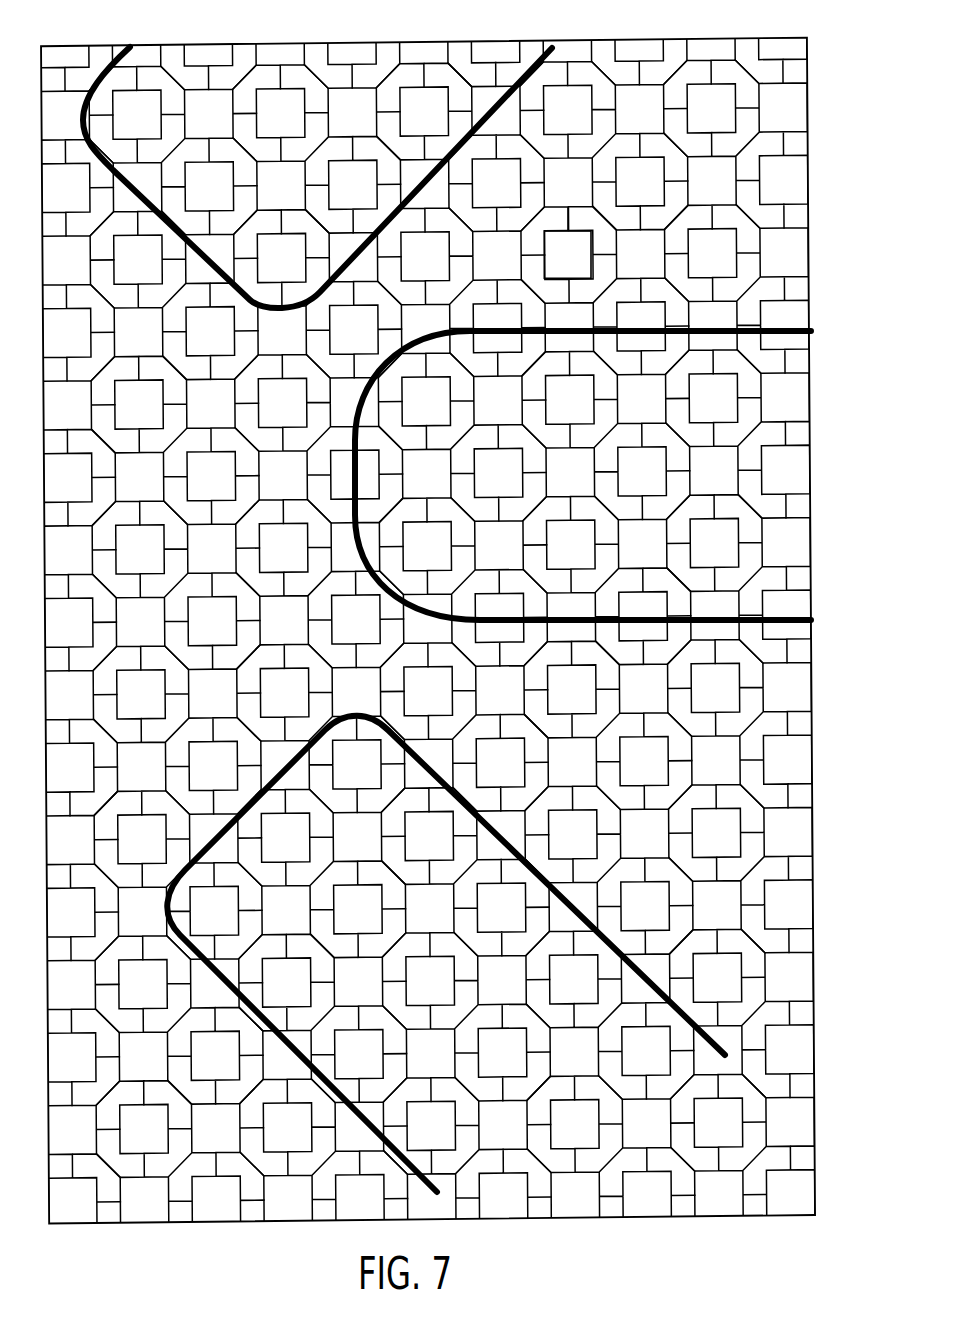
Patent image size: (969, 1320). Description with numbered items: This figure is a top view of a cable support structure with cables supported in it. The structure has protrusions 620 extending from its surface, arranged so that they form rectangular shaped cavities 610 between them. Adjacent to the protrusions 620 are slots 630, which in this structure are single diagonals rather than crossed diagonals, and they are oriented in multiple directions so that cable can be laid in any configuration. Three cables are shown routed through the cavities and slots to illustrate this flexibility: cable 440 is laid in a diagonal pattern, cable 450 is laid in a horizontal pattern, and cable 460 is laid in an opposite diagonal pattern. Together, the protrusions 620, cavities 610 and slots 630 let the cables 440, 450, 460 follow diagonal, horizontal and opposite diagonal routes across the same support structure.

The cable 440 is at (127, 46).
The cable 450 is at (812, 616).
The cable 460 is at (442, 1193).
The rectangular shaped cavity 610 is at (583, 267).
The protrusion 620 is at (592, 223).
The slot 630 is at (571, 222).